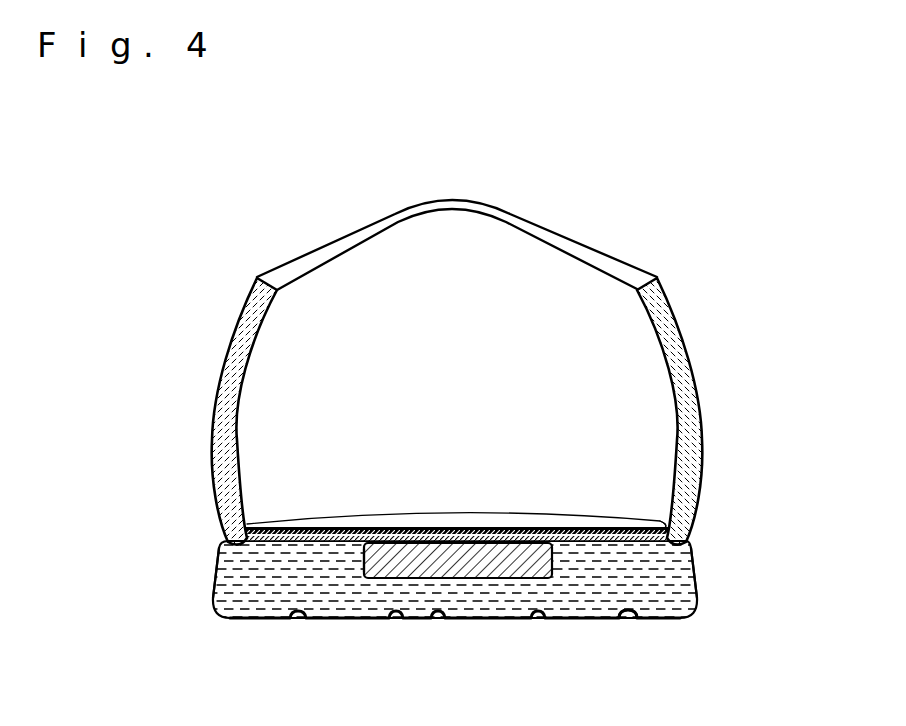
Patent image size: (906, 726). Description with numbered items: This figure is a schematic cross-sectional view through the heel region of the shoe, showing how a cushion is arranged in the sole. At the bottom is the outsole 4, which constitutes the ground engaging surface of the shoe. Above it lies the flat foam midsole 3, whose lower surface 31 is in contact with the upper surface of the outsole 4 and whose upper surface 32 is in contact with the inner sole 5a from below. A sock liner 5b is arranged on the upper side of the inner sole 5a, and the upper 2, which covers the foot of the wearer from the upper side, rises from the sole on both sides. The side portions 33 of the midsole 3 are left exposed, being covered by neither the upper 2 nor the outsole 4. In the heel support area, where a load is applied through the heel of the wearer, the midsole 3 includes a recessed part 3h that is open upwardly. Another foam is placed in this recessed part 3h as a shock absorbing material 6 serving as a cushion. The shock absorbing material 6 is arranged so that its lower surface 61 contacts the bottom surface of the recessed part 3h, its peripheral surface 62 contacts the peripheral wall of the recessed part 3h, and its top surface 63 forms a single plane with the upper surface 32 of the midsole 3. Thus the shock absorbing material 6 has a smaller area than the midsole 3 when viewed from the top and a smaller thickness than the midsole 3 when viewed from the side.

The upper 2 is at (657, 276).
The midsole 3 is at (697, 568).
The lower surface of the midsole 31 is at (620, 621).
The upper surface of the midsole 32 is at (308, 535).
The side portions of the midsole 33 is at (217, 570).
The recessed part 3h is at (620, 528).
The outsole 4 is at (672, 620).
The inner sole 5a is at (543, 530).
The sock liner 5b is at (507, 525).
The shock absorbing material 6 is at (415, 530).
The lower surface of the shock absorbing material 61 is at (468, 580).
The peripheral surface of the shock absorbing material 62 is at (361, 562).
The top surface of the shock absorbing material 63 is at (456, 537).